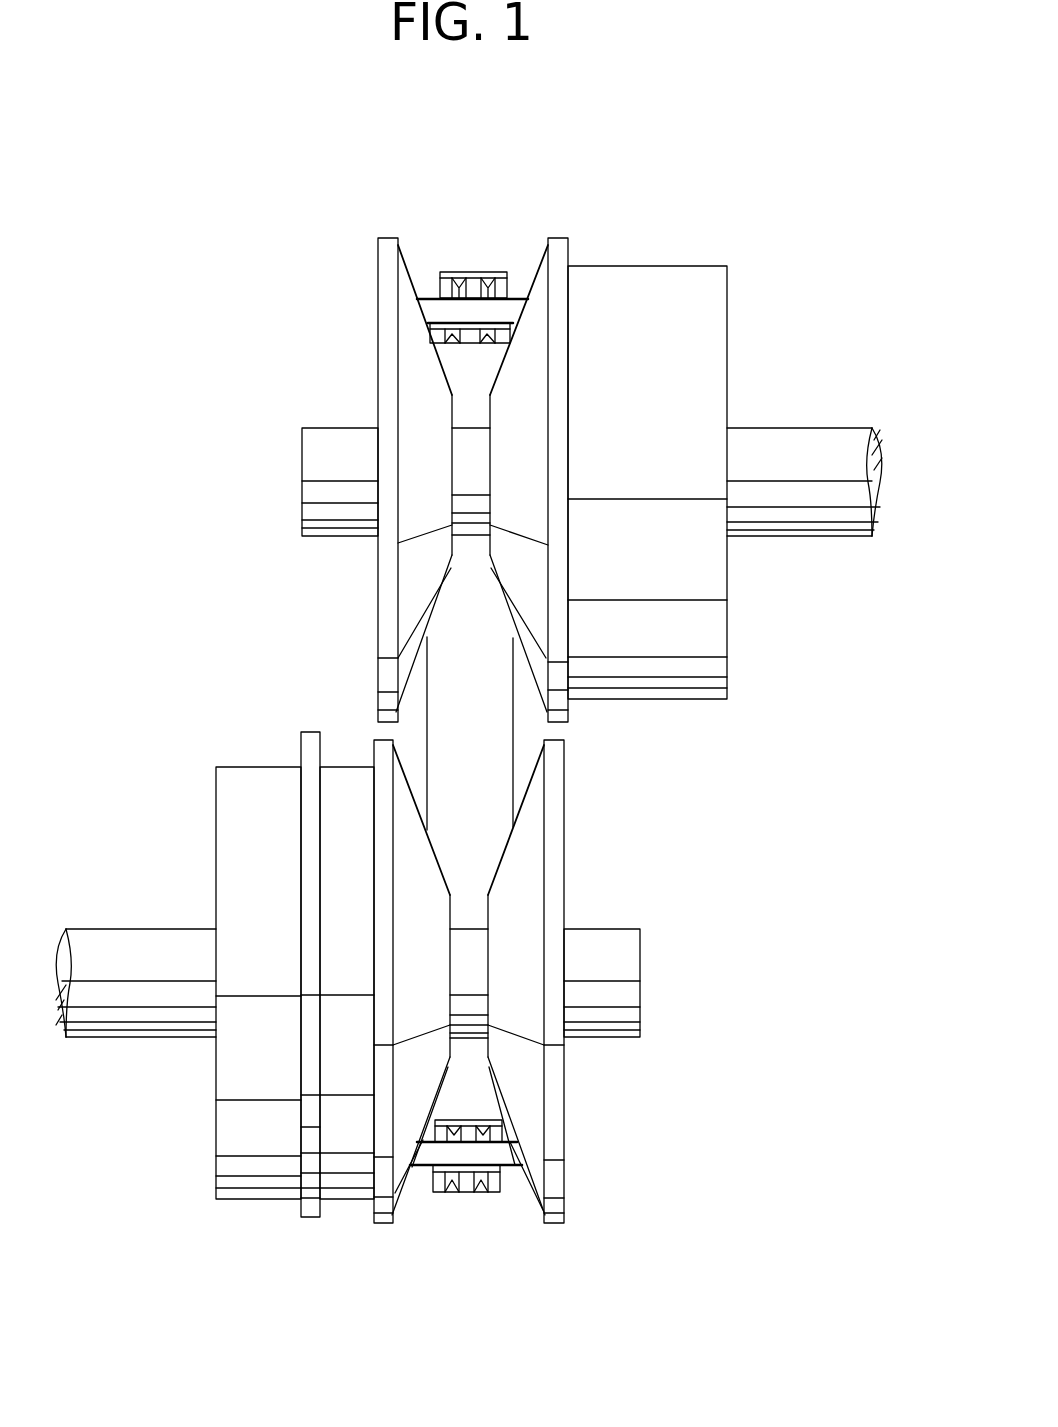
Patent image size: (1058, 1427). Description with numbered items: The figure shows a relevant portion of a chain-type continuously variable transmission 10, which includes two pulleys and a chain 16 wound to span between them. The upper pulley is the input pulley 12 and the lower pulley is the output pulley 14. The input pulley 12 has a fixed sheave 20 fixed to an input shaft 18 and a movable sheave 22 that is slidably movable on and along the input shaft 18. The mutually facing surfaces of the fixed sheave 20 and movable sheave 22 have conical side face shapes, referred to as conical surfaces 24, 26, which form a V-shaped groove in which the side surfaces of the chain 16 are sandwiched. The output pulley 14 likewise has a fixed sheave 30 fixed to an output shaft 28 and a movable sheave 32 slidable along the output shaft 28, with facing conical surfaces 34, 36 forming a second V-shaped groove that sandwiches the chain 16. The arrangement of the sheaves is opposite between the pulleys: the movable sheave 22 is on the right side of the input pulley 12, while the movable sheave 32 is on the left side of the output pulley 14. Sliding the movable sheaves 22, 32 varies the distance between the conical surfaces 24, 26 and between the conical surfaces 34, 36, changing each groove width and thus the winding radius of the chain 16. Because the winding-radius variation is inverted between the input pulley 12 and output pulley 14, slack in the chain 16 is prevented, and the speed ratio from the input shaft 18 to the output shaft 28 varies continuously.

The chain-type continuously variable transmission 10 is at (187, 435).
The input pulley 12 is at (343, 255).
The output pulley 14 is at (593, 873).
The chain 16 is at (470, 790).
The input shaft 18 is at (325, 438).
The fixed sheave 20 is at (385, 335).
The movable sheave 22 is at (567, 245).
The conical surface 24 is at (413, 292).
The conical surface 26 is at (533, 290).
The output shaft 28 is at (628, 962).
The fixed sheave 30 is at (553, 1112).
The movable sheave 32 is at (380, 1130).
The conical surface 34 is at (532, 1173).
The conical surface 36 is at (410, 1188).